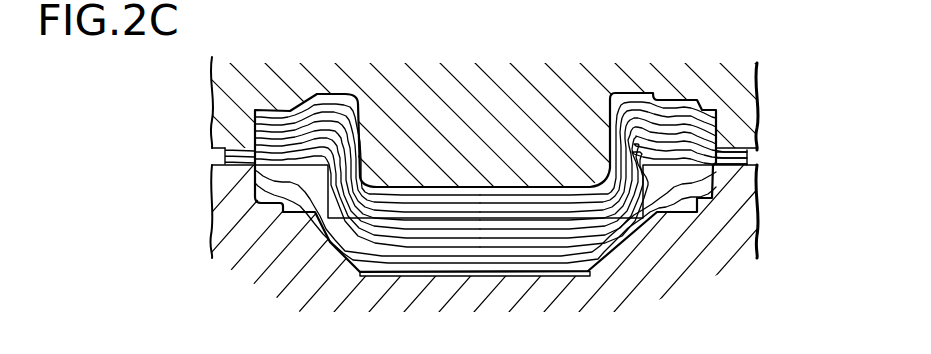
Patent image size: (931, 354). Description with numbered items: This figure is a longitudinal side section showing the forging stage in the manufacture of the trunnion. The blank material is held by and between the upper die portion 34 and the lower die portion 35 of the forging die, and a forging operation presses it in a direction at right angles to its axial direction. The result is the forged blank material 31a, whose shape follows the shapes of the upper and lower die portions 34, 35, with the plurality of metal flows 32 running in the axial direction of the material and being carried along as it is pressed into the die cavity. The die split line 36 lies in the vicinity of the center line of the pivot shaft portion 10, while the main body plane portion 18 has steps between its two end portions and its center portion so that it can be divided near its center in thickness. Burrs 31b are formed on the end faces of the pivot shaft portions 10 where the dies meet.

The pivot shaft portion 10 is at (290, 98).
The main body plane portion 18 is at (488, 278).
The forged blank material 31a is at (607, 250).
The burrs 31b is at (226, 150).
The metal flows 32 is at (662, 178).
The upper die portion 34 is at (728, 90).
The lower die portion 35 is at (745, 188).
The die split line 36 is at (605, 232).